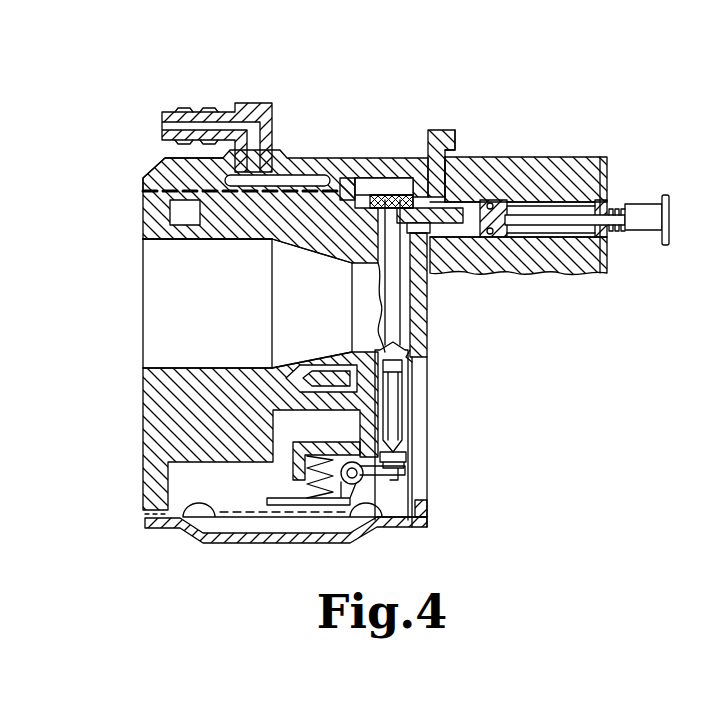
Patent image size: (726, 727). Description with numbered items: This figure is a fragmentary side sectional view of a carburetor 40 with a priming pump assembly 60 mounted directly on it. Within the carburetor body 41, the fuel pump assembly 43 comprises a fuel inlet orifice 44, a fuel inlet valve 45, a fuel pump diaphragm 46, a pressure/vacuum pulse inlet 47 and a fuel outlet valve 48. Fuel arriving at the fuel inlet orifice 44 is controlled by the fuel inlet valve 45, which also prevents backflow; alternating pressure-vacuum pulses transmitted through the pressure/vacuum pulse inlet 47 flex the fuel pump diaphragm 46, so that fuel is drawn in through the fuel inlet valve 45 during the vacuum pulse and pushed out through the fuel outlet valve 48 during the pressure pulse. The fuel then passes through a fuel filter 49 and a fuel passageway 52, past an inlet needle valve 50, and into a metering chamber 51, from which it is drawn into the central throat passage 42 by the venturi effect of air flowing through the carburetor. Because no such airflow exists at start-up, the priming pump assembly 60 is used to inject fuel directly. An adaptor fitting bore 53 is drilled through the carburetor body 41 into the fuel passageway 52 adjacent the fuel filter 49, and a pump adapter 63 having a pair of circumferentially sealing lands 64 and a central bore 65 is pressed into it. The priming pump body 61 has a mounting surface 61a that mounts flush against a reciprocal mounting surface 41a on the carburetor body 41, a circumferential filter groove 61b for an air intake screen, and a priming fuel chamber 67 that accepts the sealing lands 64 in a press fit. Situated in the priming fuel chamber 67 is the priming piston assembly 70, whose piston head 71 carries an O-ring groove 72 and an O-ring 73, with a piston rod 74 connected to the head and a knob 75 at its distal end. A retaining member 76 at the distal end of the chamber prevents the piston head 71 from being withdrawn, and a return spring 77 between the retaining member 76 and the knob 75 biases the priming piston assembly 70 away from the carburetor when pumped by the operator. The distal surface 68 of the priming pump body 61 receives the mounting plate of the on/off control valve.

The carburetor 40 is at (143, 418).
The carburetor body 41 is at (426, 337).
The mounting surface 41a is at (414, 358).
The central throat passage 42 is at (158, 290).
The fuel pump assembly 43 is at (222, 241).
The fuel inlet orifice 44 is at (156, 222).
The fuel inlet valve 45 is at (162, 176).
The fuel pump diaphragm 46 is at (312, 176).
The pressure/vacuum pulse inlet 47 is at (218, 126).
The fuel outlet valve 48 is at (348, 178).
The fuel filter 49 is at (381, 195).
The inlet needle valve 50 is at (412, 382).
The metering chamber 51 is at (242, 490).
The fuel passageway 52 is at (400, 195).
The adaptor fitting bore 53 is at (356, 262).
The priming pump assembly 60 is at (566, 217).
The priming pump body 61 is at (608, 162).
The mounting surface 61a is at (433, 130).
The circumferential filter groove 61b is at (456, 143).
The pump adapter 63 is at (472, 236).
The circumferentially sealing lands 64 is at (448, 179).
The central bore 65 is at (446, 258).
The priming fuel chamber 67 is at (482, 252).
The distal surface 68 is at (608, 160).
The priming piston assembly 70 is at (620, 240).
The piston head 71 is at (526, 202).
The O-ring groove 72 is at (504, 240).
The O-ring 73 is at (496, 200).
The piston rod 74 is at (565, 236).
The knob 75 is at (669, 210).
The retaining member 76 is at (605, 260).
The return spring 77 is at (626, 207).